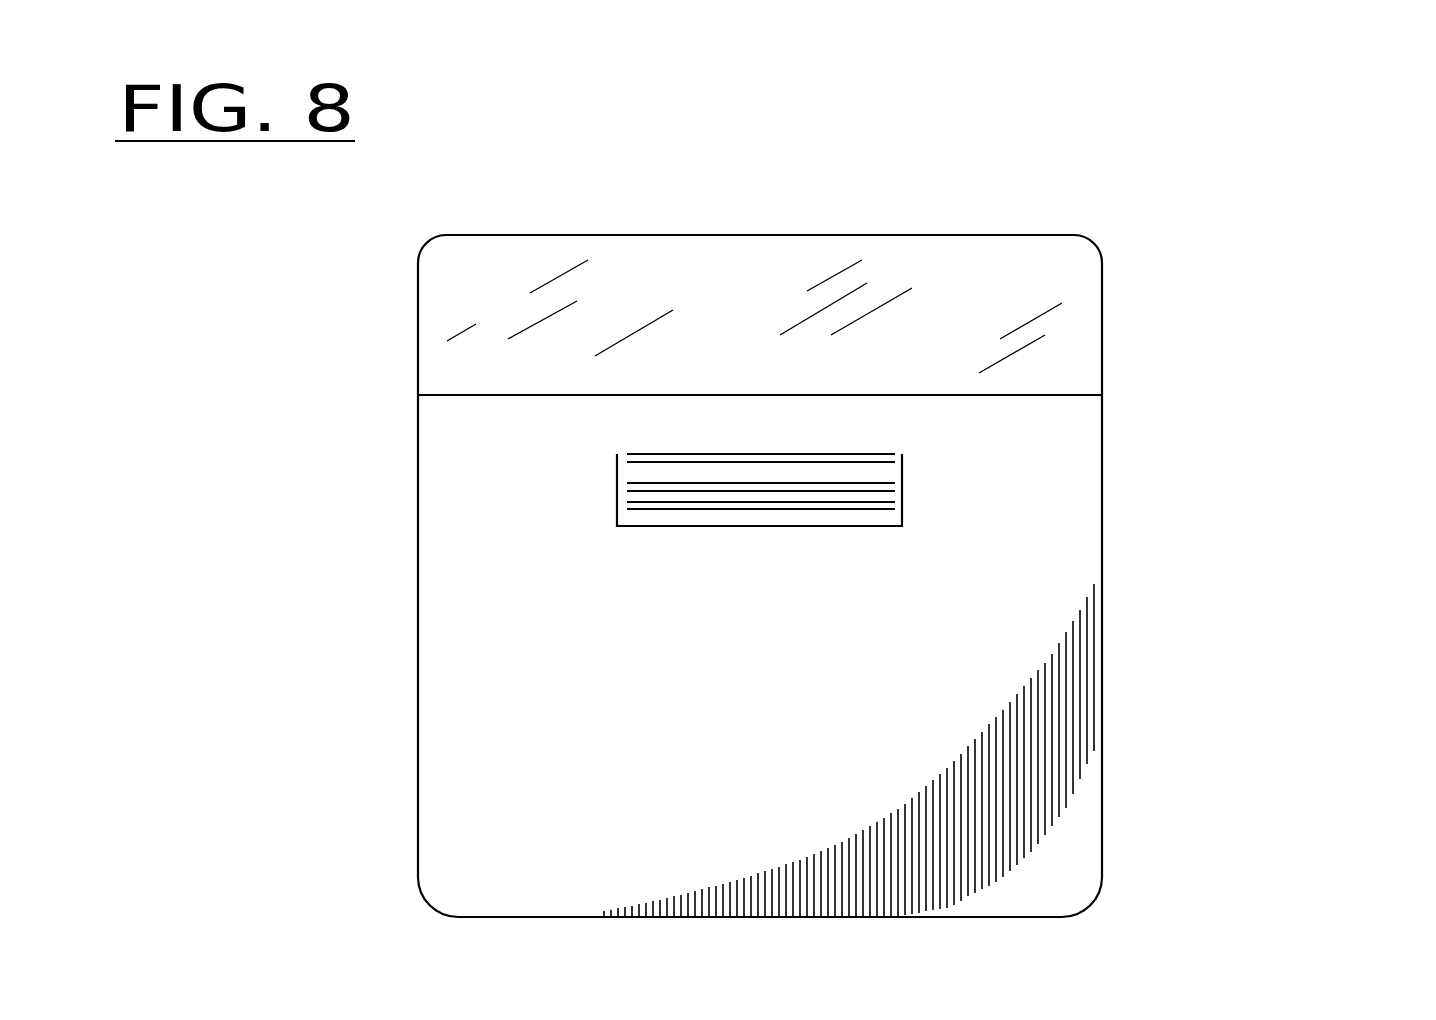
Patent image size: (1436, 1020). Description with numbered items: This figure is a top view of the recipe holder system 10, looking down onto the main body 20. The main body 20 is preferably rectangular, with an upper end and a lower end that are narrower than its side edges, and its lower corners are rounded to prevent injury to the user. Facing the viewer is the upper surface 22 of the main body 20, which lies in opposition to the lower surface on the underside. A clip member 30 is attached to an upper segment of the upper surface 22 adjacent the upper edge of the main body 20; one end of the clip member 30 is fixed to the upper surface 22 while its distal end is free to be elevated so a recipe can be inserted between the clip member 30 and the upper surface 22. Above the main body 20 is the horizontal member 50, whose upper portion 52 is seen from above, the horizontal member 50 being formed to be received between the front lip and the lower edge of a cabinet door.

The recipe holder system 10 is at (927, 486).
The main body 20 is at (1103, 812).
The upper surface 22 is at (970, 707).
The clip member 30 is at (870, 472).
The horizontal member 50 is at (892, 225).
The upper portion 52 is at (945, 270).